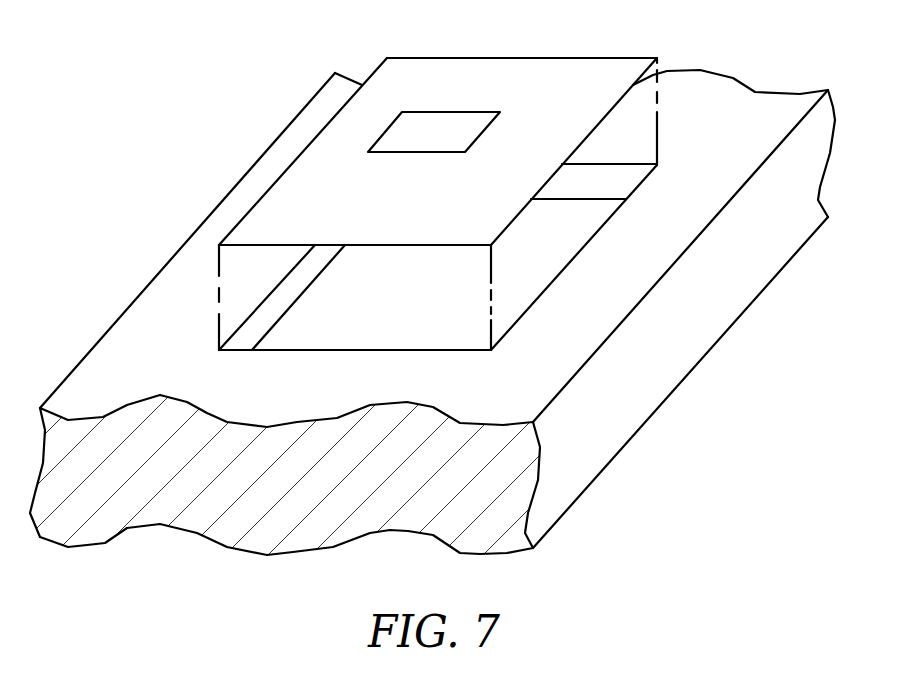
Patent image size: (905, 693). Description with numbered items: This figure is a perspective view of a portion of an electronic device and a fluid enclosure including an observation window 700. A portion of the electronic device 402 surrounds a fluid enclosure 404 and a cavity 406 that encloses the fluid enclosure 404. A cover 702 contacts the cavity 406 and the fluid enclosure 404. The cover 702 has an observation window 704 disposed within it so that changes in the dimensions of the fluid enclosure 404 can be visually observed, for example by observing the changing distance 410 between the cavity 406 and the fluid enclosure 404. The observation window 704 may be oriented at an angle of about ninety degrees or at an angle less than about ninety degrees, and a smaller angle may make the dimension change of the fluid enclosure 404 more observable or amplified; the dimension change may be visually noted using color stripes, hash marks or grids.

The observation window 700 is at (417, 291).
The electronic device 402 is at (702, 357).
The fluid enclosure 404 is at (434, 210).
The cavity 406 is at (625, 170).
The changing distance 410 is at (253, 352).
The cover 702 is at (559, 65).
The observation window 704 is at (454, 120).